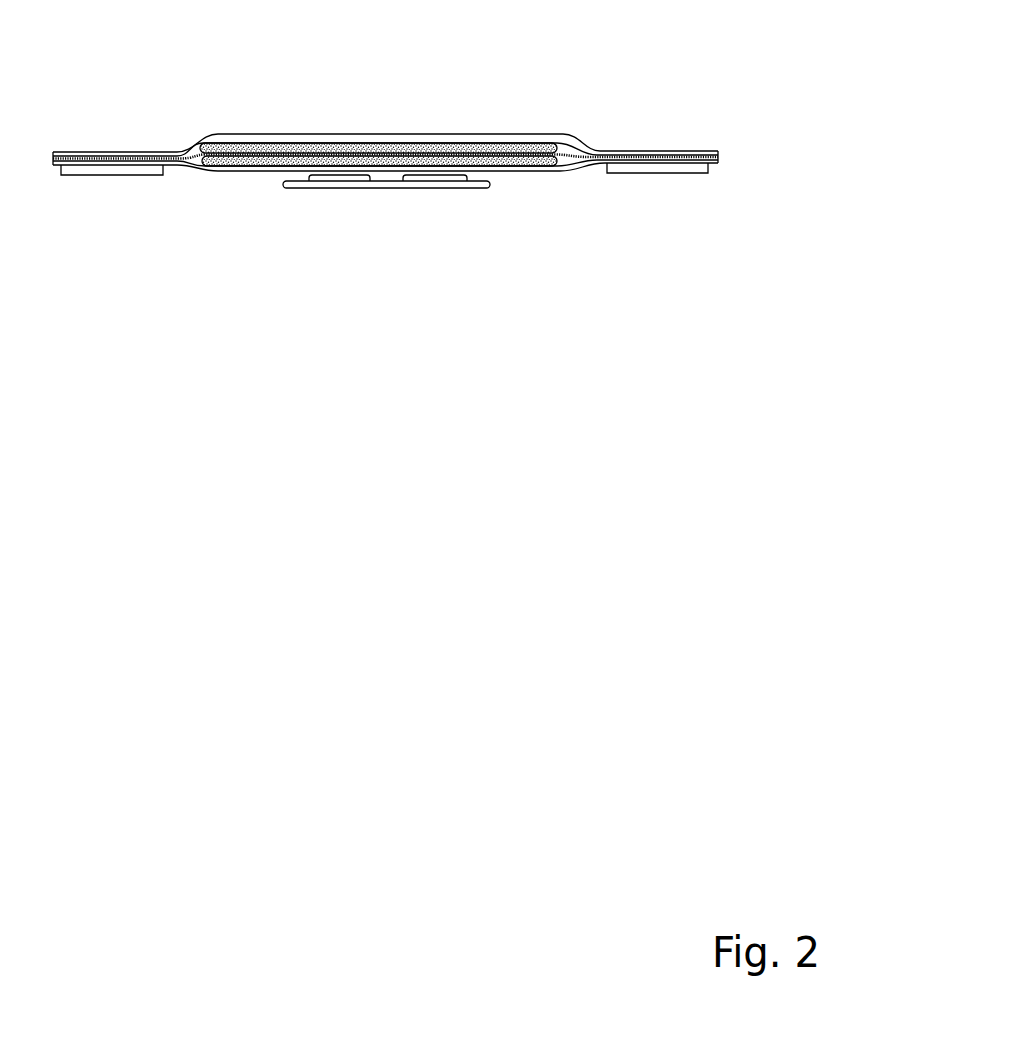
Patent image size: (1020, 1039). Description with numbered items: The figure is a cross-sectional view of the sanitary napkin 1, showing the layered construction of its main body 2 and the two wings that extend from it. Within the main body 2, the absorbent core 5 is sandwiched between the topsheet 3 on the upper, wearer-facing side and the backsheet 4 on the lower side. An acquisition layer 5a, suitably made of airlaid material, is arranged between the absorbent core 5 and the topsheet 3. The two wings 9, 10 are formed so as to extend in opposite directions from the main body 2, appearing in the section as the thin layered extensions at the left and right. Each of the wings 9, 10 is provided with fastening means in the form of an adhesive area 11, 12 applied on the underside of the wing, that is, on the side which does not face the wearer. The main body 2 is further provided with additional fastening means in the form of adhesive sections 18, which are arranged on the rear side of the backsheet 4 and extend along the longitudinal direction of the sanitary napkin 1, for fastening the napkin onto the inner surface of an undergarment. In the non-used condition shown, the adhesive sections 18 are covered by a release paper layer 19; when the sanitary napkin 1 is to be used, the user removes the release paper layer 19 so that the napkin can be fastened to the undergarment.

The sanitary napkin 1 is at (385, 153).
The main body 2 is at (385, 157).
The topsheet 3 is at (270, 140).
The backsheet 4 is at (233, 171).
The absorbent core 5 is at (470, 162).
The acquisition layer 5a is at (450, 144).
The wing 9 is at (127, 152).
The wing 10 is at (620, 150).
The adhesive area 11 is at (118, 176).
The adhesive area 12 is at (633, 167).
The adhesive sections 18 is at (327, 179).
The release paper layer 19 is at (380, 188).